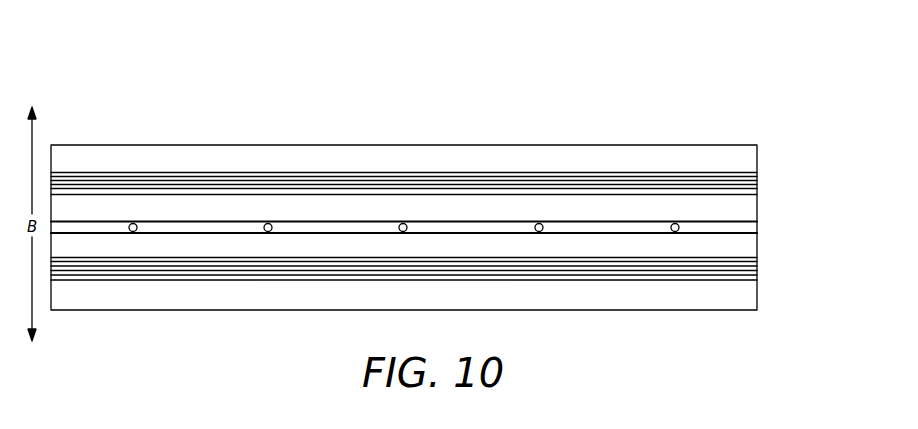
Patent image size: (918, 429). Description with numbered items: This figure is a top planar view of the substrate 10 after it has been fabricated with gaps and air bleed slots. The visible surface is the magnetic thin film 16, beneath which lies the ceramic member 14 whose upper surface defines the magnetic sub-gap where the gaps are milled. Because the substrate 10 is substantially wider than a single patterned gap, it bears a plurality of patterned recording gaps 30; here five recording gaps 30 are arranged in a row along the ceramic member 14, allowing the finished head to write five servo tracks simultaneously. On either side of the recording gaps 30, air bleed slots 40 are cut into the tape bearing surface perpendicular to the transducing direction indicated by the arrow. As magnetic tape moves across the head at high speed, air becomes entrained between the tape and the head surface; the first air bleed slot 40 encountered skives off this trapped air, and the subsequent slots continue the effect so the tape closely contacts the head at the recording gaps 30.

The substrate 10 is at (729, 59).
The ceramic member 14 is at (730, 231).
The magnetic thin film 16 is at (710, 160).
The recording gap 30 is at (137, 225).
The air bleed slot 40 is at (763, 181).